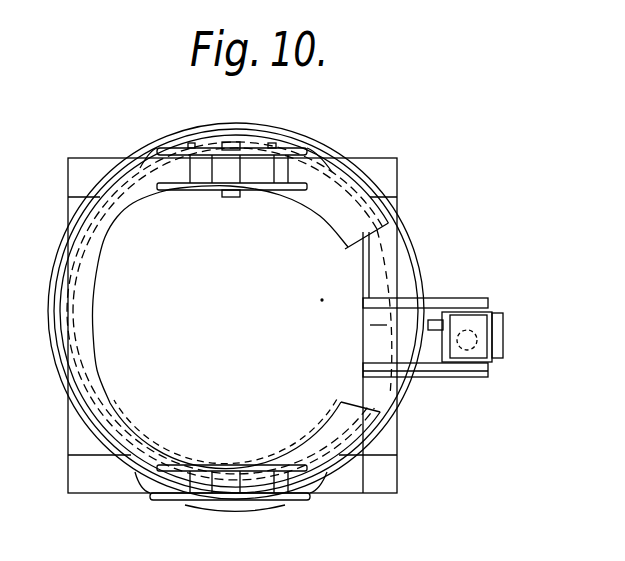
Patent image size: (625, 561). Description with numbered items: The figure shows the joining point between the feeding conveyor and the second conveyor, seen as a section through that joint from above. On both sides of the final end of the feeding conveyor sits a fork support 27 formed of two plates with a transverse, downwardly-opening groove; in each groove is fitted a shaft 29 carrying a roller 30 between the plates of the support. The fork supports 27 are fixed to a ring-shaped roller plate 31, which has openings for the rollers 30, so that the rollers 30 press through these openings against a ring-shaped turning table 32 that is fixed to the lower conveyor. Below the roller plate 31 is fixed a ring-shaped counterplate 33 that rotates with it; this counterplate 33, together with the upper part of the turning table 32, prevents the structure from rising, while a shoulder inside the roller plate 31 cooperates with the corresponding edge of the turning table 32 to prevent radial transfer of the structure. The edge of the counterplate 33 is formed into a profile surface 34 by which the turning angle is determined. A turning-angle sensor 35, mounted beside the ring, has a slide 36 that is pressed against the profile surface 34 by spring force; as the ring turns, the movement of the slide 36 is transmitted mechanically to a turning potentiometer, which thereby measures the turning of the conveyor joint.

The fork support 27 is at (303, 157).
The shaft 29 is at (237, 142).
The roller 30 is at (225, 186).
The roller plate 31 is at (350, 188).
The turning table 32 is at (372, 433).
The counterplate 33 is at (100, 190).
The profile surface 34 is at (380, 210).
The turning-angle sensor 35 is at (483, 338).
The slide 36 is at (440, 294).